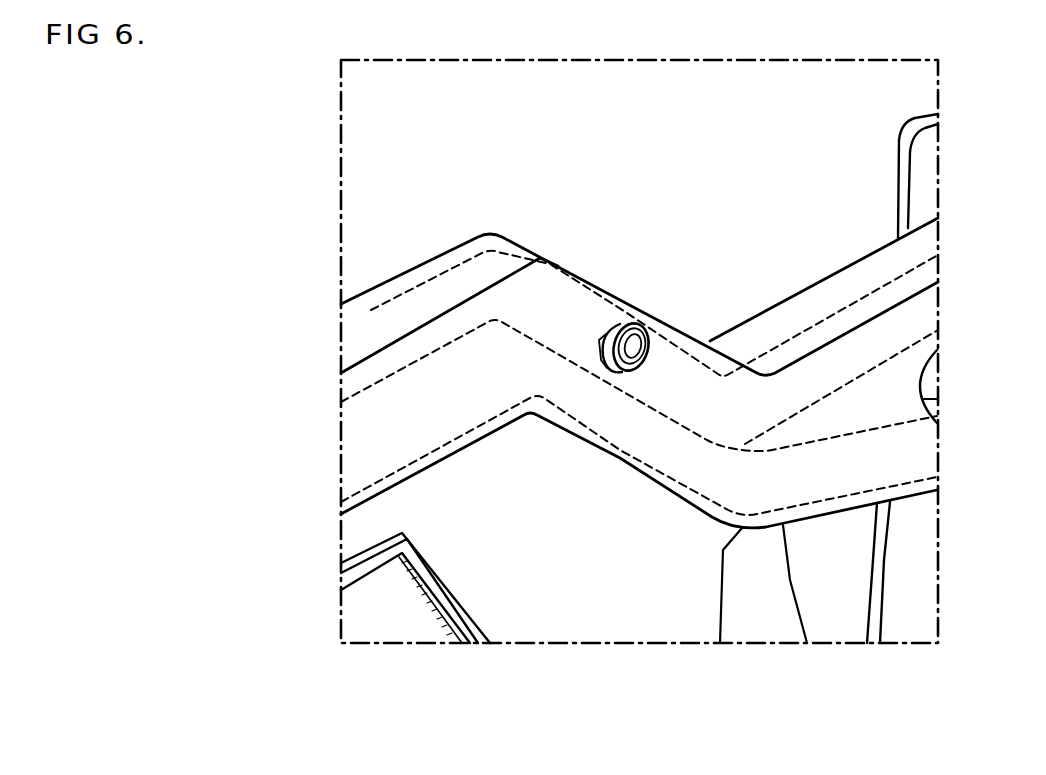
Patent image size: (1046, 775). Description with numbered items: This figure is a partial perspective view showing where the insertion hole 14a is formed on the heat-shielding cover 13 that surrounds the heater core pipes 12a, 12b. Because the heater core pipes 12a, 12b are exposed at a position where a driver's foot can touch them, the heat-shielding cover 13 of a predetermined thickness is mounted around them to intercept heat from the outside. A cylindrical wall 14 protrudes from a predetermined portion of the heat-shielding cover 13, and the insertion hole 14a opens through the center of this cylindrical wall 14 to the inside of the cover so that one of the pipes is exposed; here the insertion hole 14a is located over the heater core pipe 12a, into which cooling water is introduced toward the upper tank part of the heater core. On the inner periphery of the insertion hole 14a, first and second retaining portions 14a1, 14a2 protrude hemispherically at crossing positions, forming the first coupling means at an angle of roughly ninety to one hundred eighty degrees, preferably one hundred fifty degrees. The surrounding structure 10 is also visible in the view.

The roof panel 10 is at (528, 595).
The heater core pipe 12a is at (357, 319).
The heater core pipe 12b is at (360, 421).
The heat-shielding cover 13 is at (682, 503).
The cylindrical wall 14 is at (627, 312).
The insertion hole 14a is at (665, 348).
The first retaining portion 14a1 is at (608, 358).
The second retaining portion 14a2 is at (652, 328).